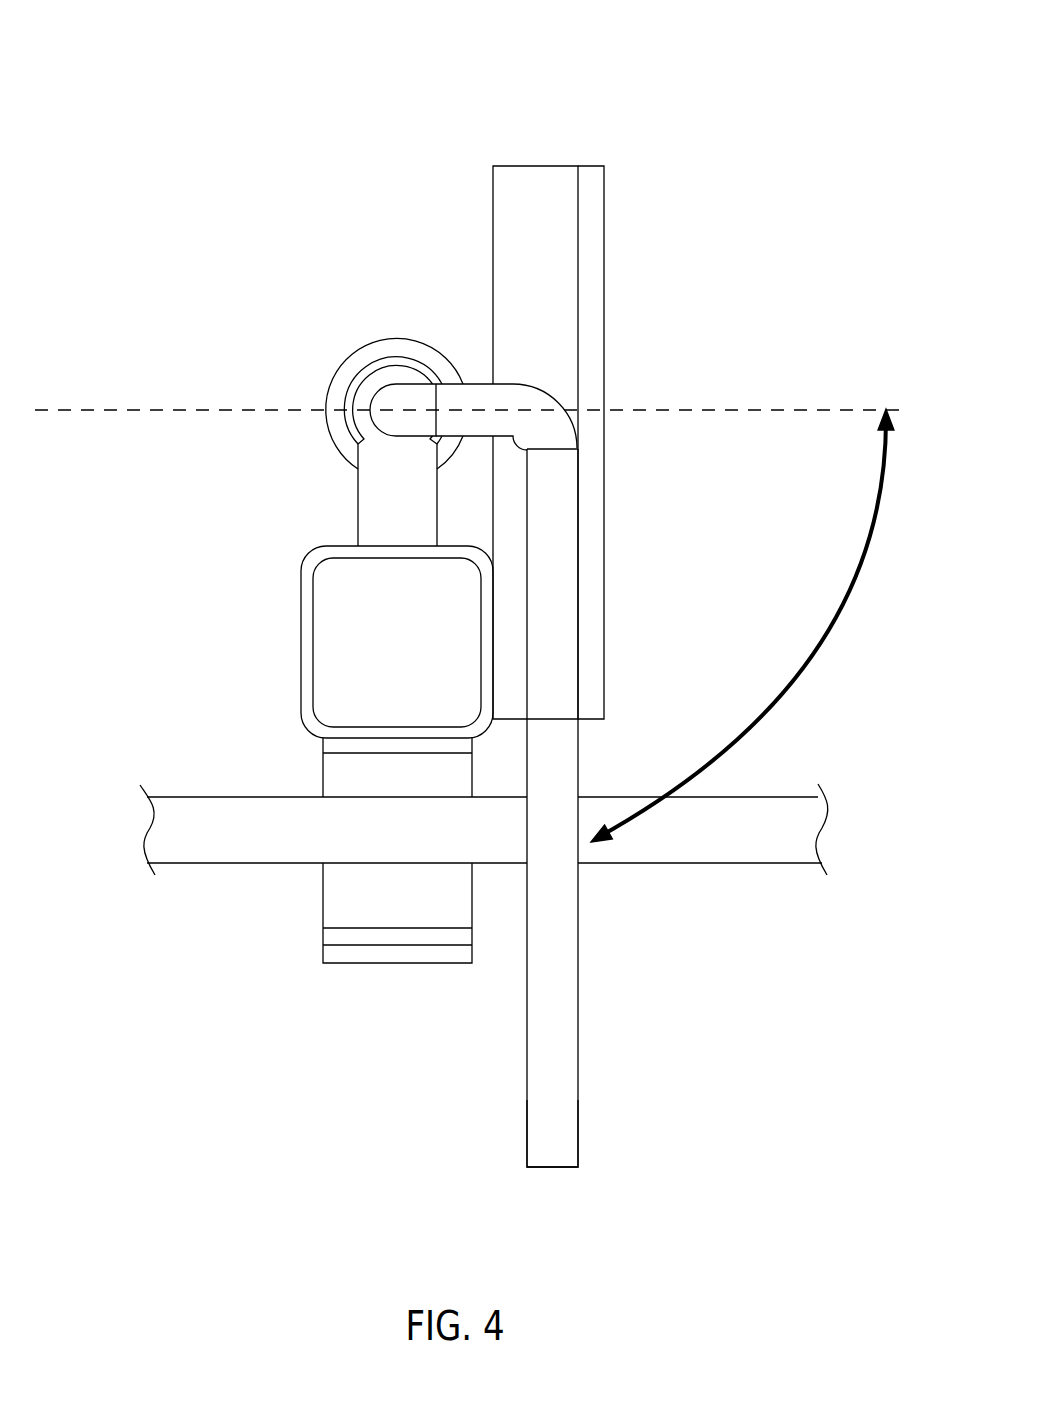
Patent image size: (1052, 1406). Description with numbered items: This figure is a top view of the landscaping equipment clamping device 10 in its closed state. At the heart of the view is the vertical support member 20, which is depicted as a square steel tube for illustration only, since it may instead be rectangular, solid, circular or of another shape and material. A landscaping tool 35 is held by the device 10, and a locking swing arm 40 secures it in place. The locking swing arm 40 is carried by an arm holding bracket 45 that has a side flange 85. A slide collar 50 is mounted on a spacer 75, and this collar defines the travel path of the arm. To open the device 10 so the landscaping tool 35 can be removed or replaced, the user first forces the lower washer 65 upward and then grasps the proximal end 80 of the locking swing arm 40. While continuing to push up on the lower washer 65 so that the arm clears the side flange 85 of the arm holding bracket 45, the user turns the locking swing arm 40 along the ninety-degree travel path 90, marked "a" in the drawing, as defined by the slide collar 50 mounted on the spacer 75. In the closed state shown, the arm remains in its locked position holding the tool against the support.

The landscaping equipment clamping device 10 is at (117, 176).
The vertical support member 20 is at (296, 646).
The landscaping tool 35 is at (254, 837).
The locking swing arm 40 is at (527, 402).
The arm holding bracket 45 is at (545, 207).
The slide collar 50 is at (355, 399).
The lower washer 65 is at (352, 355).
The spacer 75 is at (377, 503).
The proximal end 80 is at (552, 1129).
The side flange 85 is at (590, 282).
The ninety-degree travel path 90 is at (815, 640).